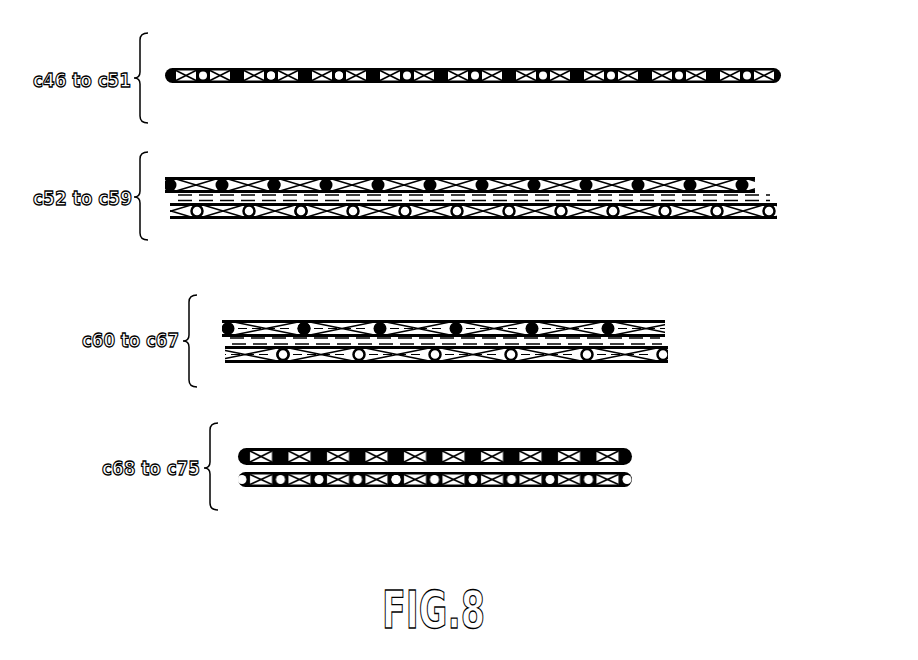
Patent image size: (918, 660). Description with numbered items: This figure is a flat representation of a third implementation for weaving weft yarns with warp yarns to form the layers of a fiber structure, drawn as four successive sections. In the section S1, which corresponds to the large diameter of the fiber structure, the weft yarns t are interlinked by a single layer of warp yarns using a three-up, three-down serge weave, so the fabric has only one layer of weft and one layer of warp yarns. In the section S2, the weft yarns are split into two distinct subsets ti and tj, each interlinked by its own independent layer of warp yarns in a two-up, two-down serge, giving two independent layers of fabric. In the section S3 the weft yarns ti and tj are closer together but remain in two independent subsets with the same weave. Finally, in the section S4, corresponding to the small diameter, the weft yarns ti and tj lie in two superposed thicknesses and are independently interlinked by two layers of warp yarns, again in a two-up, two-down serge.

The section S1 is at (495, 75).
The section S2 is at (145, 198).
The section S3 is at (207, 341).
The section S4 is at (230, 468).
The weft yarns t is at (337, 66).
The first subset of weft yarns ti is at (328, 177).
The second subset of weft yarns tj is at (357, 220).